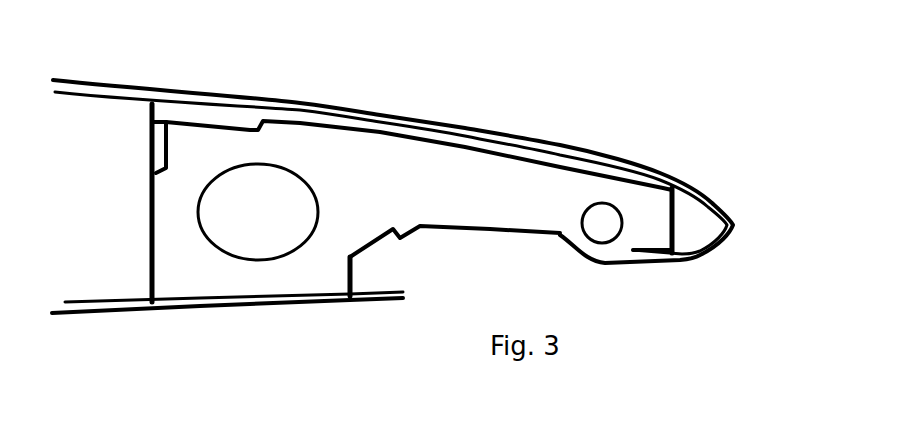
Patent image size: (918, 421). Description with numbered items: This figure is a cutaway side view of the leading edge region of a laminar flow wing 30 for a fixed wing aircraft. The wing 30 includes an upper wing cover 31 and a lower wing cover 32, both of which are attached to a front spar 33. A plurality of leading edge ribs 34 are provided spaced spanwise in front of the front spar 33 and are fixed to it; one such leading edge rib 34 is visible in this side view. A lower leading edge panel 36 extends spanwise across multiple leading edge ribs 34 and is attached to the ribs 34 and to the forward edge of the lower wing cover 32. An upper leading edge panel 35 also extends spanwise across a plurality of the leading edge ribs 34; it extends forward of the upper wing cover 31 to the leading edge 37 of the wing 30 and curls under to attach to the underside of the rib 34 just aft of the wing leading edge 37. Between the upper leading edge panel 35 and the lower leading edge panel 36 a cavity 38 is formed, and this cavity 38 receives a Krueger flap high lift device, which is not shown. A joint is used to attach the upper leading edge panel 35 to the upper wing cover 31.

The laminar flow wing 30 is at (577, 80).
The upper wing cover 31 is at (82, 81).
The lower wing cover 32 is at (113, 318).
The front spar 33 is at (147, 203).
The leading edge rib 34 is at (462, 221).
The upper leading edge panel 35 is at (466, 128).
The lower leading edge panel 36 is at (323, 303).
The leading edge 37 is at (736, 225).
The cavity 38 is at (511, 262).